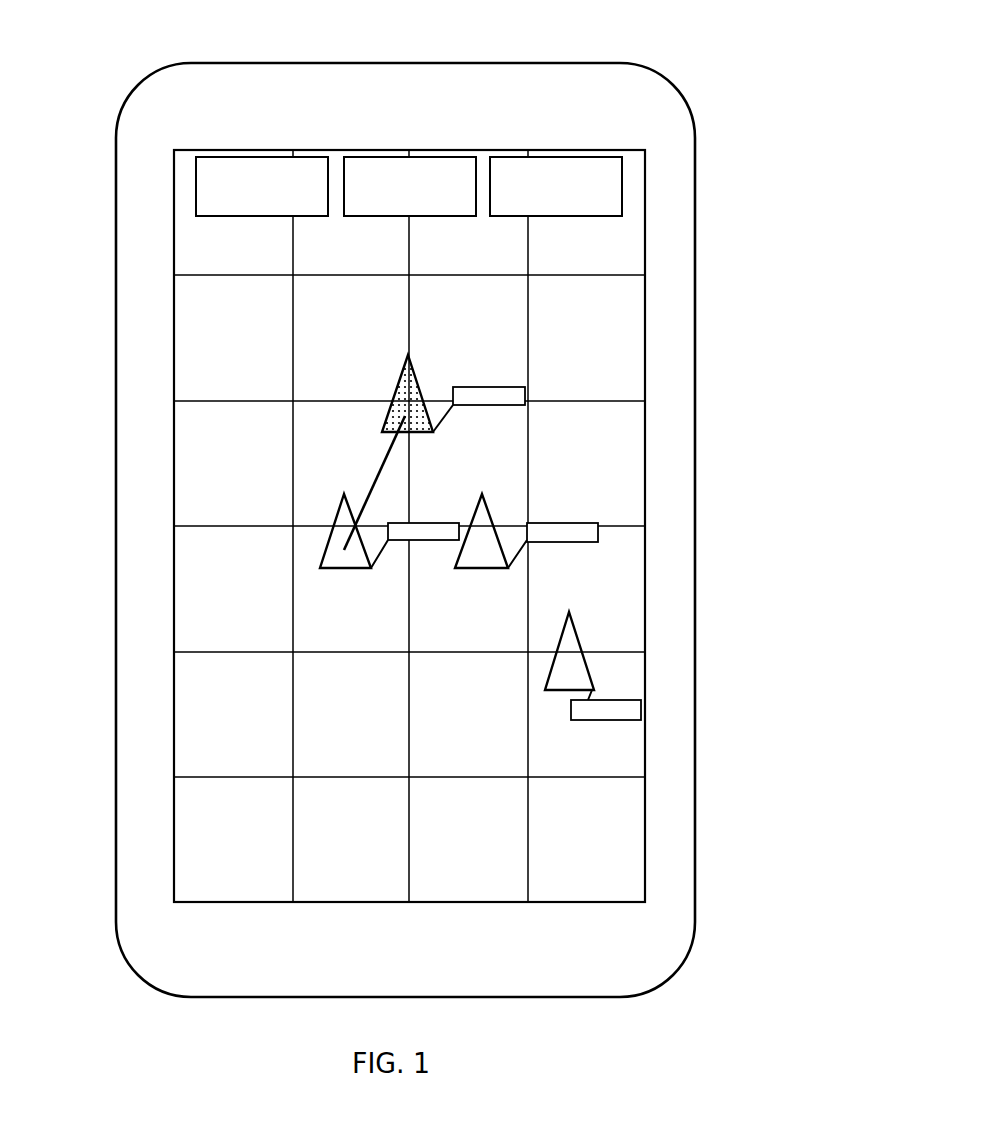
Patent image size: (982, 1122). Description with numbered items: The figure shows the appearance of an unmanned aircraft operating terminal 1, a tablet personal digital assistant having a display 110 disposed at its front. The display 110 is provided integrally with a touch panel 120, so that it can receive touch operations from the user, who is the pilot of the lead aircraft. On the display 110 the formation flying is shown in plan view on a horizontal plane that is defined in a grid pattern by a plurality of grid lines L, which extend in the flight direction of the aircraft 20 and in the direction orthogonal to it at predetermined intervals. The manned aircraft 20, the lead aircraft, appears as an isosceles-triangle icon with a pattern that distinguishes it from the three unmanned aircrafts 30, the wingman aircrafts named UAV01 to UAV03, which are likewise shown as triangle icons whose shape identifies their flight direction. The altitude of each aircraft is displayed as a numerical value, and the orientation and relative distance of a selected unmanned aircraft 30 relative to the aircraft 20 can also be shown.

The unmanned aircraft operating terminal 1 is at (413, 37).
The manned aircraft 20 is at (388, 380).
The unmanned aircrafts 30 is at (545, 662).
The display 110 is at (645, 367).
The touch panel 120 is at (409, 526).
The grid lines L is at (530, 860).